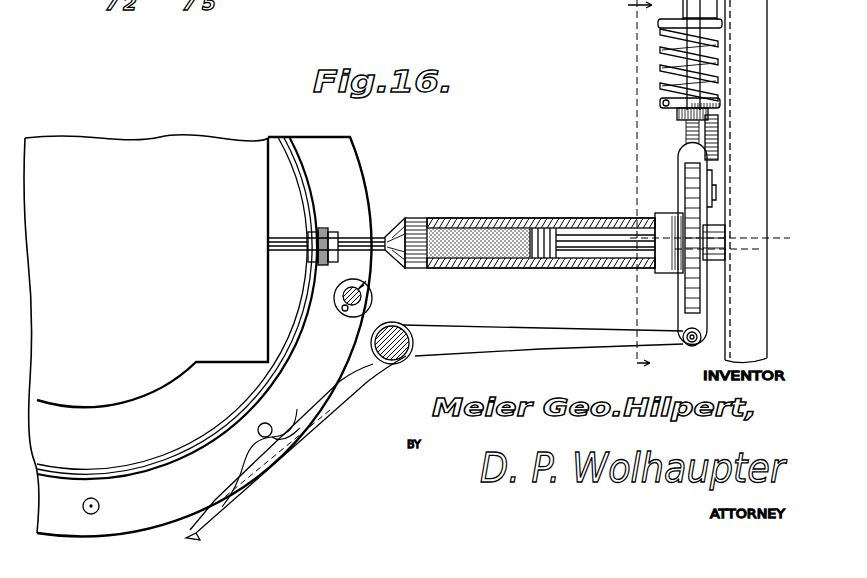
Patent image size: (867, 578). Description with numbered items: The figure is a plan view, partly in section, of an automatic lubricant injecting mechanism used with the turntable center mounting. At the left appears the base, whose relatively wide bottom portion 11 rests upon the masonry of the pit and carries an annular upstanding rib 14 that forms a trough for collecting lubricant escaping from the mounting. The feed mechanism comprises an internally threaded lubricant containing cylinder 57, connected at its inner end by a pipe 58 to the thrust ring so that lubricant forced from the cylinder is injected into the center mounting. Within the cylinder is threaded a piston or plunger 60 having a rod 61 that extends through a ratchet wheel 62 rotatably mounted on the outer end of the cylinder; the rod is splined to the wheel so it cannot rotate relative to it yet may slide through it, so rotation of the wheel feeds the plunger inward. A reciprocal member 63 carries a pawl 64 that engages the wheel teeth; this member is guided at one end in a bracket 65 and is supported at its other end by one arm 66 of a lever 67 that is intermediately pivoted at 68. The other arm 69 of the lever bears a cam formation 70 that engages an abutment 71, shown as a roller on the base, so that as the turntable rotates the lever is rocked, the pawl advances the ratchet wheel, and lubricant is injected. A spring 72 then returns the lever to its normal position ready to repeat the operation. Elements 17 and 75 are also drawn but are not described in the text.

The bottom portion 11 is at (197, 336).
The annular upstanding rib 14 is at (158, 455).
The axis line 17 is at (640, 195).
The lubricant containing cylinder 57 is at (505, 210).
The pipe 58 is at (278, 237).
The piston or plunger 60 is at (545, 218).
The rod 61 is at (580, 251).
The ratchet wheel 62 is at (691, 196).
The reciprocal member 63 is at (679, 287).
The pawl 64 is at (687, 137).
The bracket 65 is at (660, 23).
The arm 66 is at (559, 348).
The lever 67 is at (389, 377).
The pivot 68 is at (401, 328).
The arm 69 is at (282, 460).
The cam formation 70 is at (296, 425).
The abutment 71 is at (337, 310).
The spring 72 is at (665, 66).
The lower collar 75 is at (662, 102).